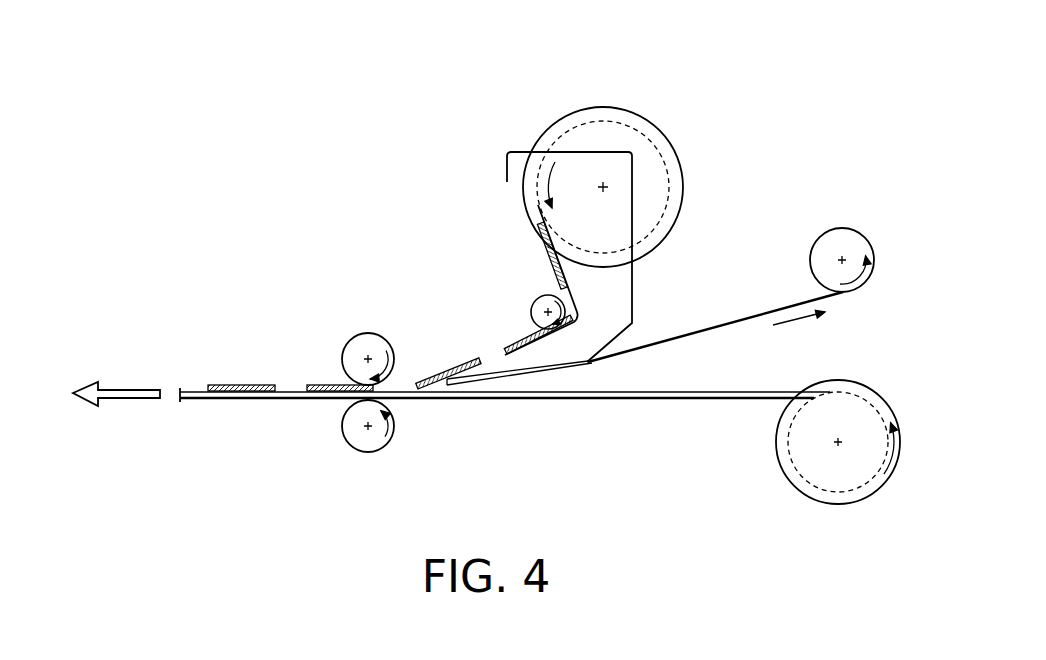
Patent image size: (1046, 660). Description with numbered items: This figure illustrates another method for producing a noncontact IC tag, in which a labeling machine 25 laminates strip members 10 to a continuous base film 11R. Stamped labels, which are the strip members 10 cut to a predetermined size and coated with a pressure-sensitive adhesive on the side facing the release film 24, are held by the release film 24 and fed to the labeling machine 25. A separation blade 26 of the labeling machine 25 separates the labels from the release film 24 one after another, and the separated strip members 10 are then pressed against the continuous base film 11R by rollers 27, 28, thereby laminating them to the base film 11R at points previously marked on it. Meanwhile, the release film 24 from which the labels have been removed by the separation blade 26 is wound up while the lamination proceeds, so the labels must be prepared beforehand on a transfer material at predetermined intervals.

The strip members 10 is at (325, 385).
The continuous base film 11R is at (700, 400).
The release film 24 is at (715, 325).
The labeling machine 25 is at (715, 83).
The separation blade 26 is at (463, 378).
The roller 27 is at (364, 347).
The roller 28 is at (357, 442).